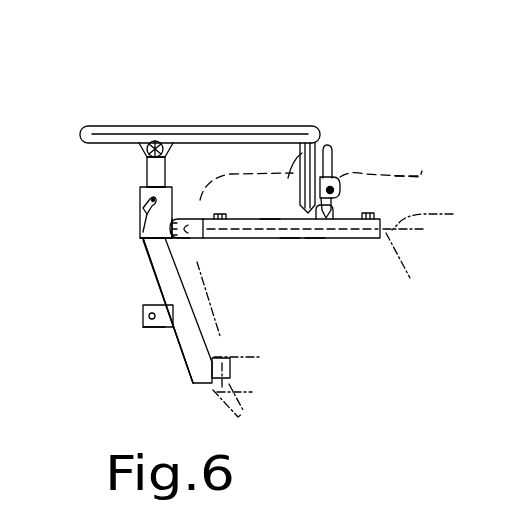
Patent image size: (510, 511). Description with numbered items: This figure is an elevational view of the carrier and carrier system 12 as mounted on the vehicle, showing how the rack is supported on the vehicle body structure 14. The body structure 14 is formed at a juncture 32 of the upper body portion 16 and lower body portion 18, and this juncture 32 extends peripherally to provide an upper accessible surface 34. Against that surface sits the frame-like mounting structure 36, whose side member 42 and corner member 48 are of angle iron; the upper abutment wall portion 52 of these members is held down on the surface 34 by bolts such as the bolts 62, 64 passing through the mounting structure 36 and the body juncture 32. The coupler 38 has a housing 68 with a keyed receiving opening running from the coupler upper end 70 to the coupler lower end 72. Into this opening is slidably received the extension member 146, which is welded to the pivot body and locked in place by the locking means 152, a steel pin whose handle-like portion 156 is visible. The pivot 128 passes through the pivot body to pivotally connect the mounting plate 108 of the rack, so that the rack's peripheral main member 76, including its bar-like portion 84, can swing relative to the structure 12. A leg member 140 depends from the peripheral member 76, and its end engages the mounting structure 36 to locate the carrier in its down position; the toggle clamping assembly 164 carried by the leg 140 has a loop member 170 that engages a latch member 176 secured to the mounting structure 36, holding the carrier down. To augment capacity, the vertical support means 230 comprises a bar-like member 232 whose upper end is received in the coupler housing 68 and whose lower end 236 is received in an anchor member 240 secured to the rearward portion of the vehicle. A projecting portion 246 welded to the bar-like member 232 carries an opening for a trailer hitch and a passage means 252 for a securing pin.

The carrier and carrier system 12 is at (128, 271).
The body structure 14 is at (374, 170).
The upper body portion 16 is at (395, 175).
The lower body portion 18 is at (215, 339).
The juncture 32 is at (386, 233).
The accessible surface 34 is at (439, 214).
The mounting structure 36 is at (249, 241).
The coupler 38 is at (140, 194).
The side member 42 is at (316, 240).
The corner member 48 is at (177, 240).
The upper abutment wall portion 52 is at (272, 219).
The bolt 62 is at (221, 213).
The bolt 64 is at (370, 212).
The coupler housing 68 is at (187, 219).
The coupler upper end 70 is at (164, 186).
The coupler lower end 72 is at (145, 250).
The peripheral main member 76 is at (303, 126).
The bar-like portion 84 is at (272, 129).
The mounting plate 108 is at (139, 149).
The pivot 128 is at (148, 142).
The leg member 140 is at (292, 240).
The extension member 146 is at (149, 167).
The locking means 152 is at (144, 228).
The handle-like portion 156 is at (142, 204).
The toggle clamping assembly 164 is at (341, 167).
The loop member 170 is at (340, 194).
The latch member 176 is at (330, 238).
The vertical support means 230 is at (186, 366).
The bar-like member 232 is at (164, 280).
The lower end 236 is at (217, 384).
The anchor member 240 is at (252, 392).
The projecting portion 246 is at (158, 330).
The passage means 252 is at (146, 317).